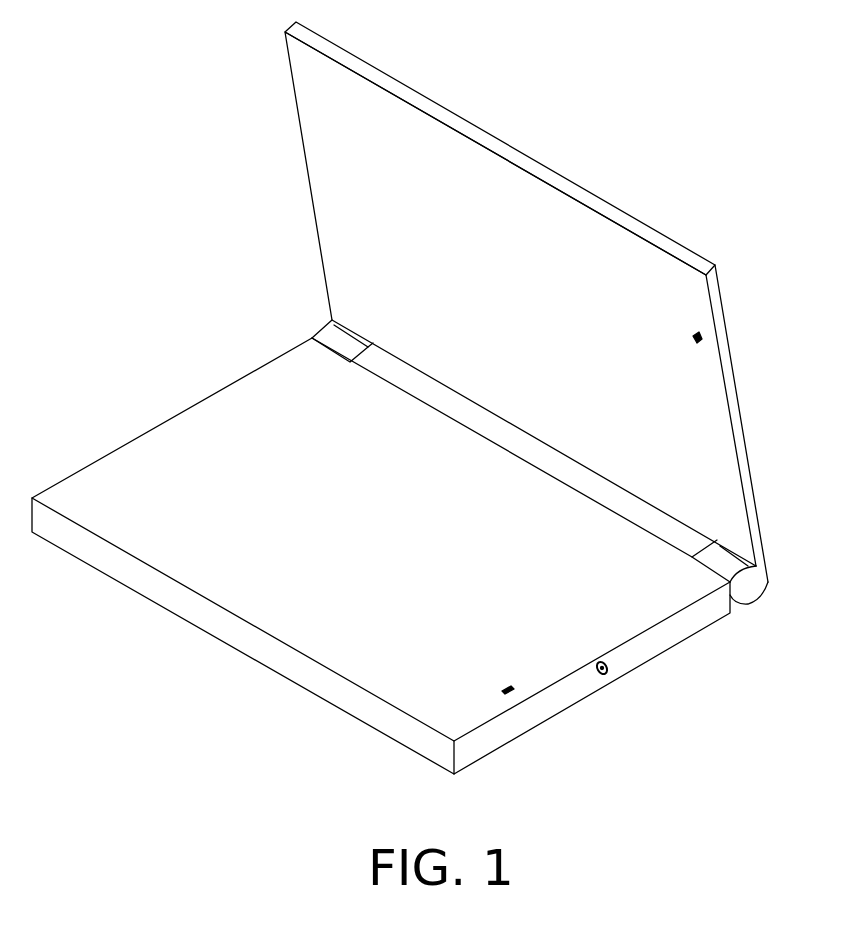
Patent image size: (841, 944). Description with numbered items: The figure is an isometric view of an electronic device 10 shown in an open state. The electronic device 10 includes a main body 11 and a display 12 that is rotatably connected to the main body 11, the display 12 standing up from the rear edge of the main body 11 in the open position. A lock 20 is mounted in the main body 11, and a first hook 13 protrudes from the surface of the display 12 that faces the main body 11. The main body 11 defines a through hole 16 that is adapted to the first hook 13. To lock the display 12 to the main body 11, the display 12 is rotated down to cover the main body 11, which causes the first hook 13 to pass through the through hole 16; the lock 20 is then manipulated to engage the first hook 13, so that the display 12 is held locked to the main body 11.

The electronic device 10 is at (605, 113).
The main body 11 is at (177, 465).
The display 12 is at (682, 290).
The first hook 13 is at (701, 340).
The through hole 16 is at (510, 694).
The lock 20 is at (606, 672).